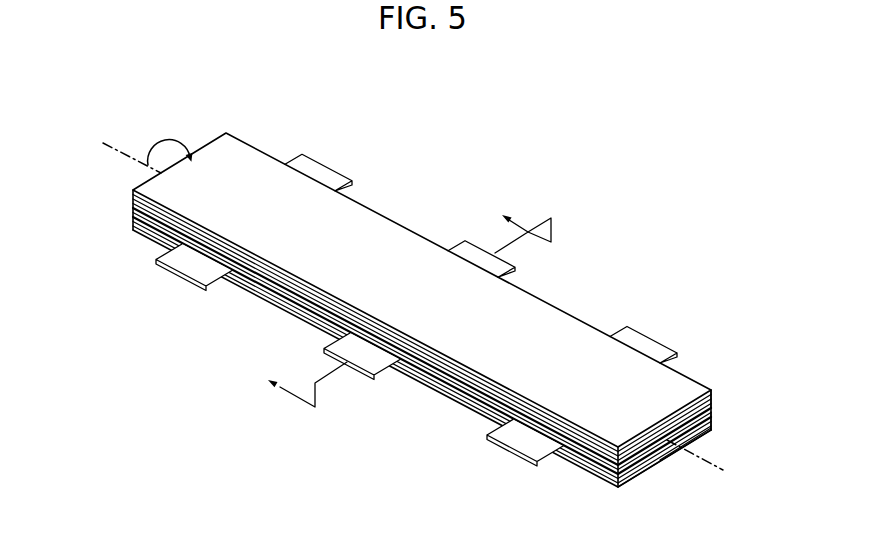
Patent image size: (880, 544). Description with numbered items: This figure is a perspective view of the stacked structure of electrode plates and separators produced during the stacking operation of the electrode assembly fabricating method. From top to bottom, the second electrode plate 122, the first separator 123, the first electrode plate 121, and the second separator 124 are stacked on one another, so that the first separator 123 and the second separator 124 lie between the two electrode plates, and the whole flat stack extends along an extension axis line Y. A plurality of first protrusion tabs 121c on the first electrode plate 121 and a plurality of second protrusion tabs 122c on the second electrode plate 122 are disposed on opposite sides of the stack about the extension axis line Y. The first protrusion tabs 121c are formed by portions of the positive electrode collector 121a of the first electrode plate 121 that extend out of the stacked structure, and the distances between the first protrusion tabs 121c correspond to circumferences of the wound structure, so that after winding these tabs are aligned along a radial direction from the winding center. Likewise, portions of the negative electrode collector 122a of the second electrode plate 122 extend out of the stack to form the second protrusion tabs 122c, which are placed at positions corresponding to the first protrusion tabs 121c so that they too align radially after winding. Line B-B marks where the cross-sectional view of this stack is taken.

The first electrode plate 121 is at (622, 485).
The positive electrode collector 121a is at (712, 428).
The first protrusion tabs 121c is at (193, 268).
The second electrode plate 122 is at (133, 190).
The negative electrode collector 122a is at (713, 406).
The second protrusion tabs 122c is at (320, 165).
The first separator 123 is at (132, 210).
The second separator 124 is at (636, 478).
The extension axis line Y is at (723, 470).
The line B- B is at (400, 304).